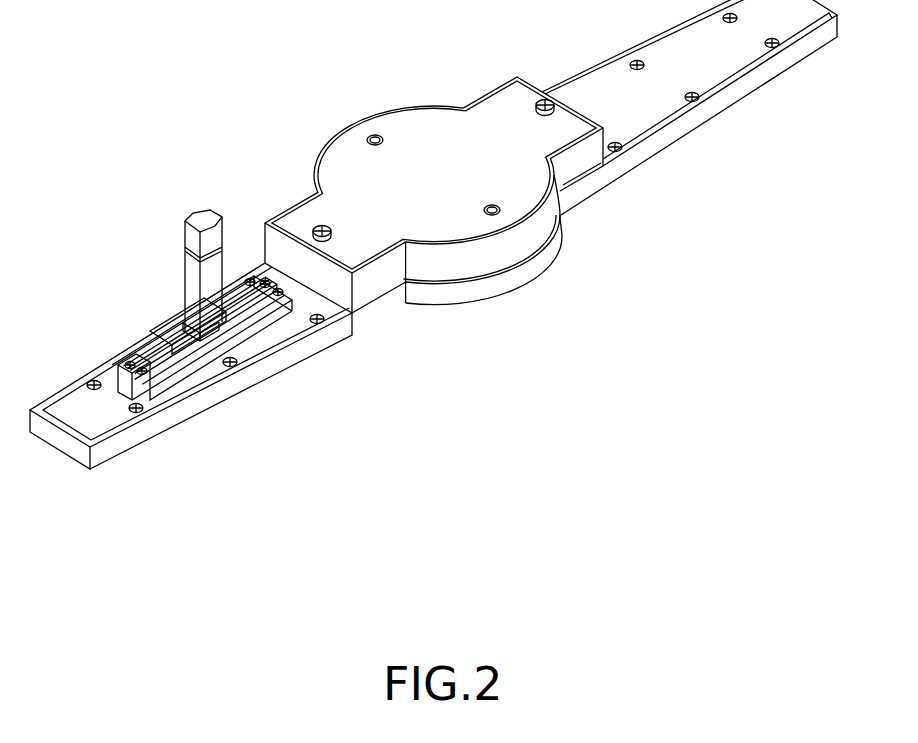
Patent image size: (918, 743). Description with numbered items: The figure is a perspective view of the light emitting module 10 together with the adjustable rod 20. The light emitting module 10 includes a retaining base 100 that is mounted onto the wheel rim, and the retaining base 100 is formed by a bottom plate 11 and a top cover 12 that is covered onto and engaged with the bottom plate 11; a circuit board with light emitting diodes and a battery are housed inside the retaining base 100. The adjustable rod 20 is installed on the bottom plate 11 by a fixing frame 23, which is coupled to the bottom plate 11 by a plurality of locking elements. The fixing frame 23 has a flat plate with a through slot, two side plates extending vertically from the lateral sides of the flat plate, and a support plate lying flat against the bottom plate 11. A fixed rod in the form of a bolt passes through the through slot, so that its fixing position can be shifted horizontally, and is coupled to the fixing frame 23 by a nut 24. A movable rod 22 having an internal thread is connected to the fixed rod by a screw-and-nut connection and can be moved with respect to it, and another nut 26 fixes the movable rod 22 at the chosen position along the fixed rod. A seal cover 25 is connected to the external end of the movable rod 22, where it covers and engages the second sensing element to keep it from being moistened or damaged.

The retaining base 100 is at (433, 234).
The bottom plate 11 is at (642, 112).
The top cover 12 is at (758, 78).
The light emitting module 10 is at (550, 277).
The adjustable rod 20 is at (182, 222).
The movable rod 22 is at (192, 268).
The fixing frame 23 is at (258, 315).
The nut 24 is at (165, 333).
The seal cover 25 is at (207, 214).
The nut 26 is at (172, 322).